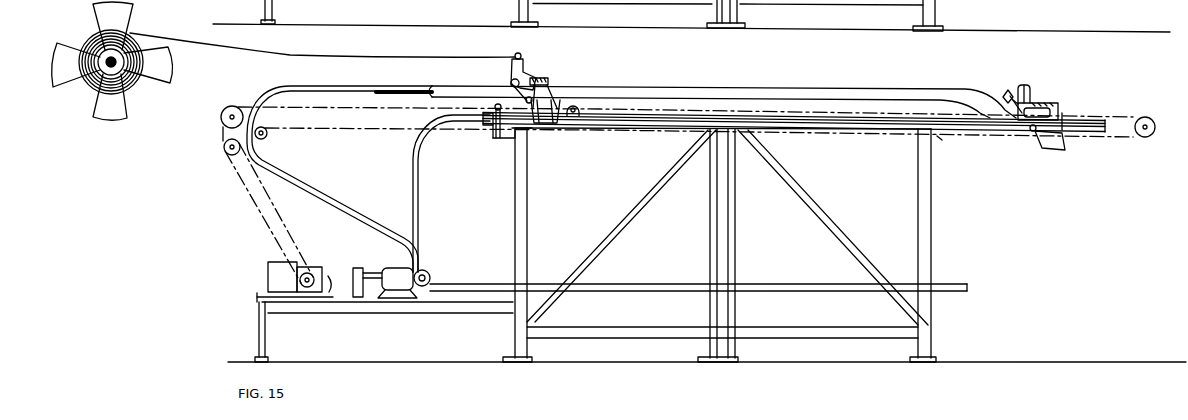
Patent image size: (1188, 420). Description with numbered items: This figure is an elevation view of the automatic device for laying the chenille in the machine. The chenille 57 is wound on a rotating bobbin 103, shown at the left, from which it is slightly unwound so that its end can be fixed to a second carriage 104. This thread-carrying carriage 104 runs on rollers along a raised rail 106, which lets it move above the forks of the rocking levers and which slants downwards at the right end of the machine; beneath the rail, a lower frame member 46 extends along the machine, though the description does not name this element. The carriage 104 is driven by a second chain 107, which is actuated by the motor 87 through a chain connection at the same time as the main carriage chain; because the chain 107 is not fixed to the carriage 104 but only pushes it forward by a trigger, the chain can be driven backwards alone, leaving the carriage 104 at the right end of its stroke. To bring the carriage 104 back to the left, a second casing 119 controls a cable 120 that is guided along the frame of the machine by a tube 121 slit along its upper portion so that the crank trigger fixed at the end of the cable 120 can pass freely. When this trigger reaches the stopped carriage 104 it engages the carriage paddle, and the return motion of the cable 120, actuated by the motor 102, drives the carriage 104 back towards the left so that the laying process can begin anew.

The rotating bobbin 103 is at (124, 96).
The chenille 57 is at (332, 57).
The second carriage 104 is at (530, 75).
The raised rail 106 is at (896, 96).
The second chain 107 is at (365, 129).
The tube 121 is at (488, 126).
The cable 120 is at (419, 171).
The lower guide rail 46 is at (852, 134).
The second casing 119 is at (431, 274).
The motor 87 is at (297, 288).
The motor 102 is at (397, 283).